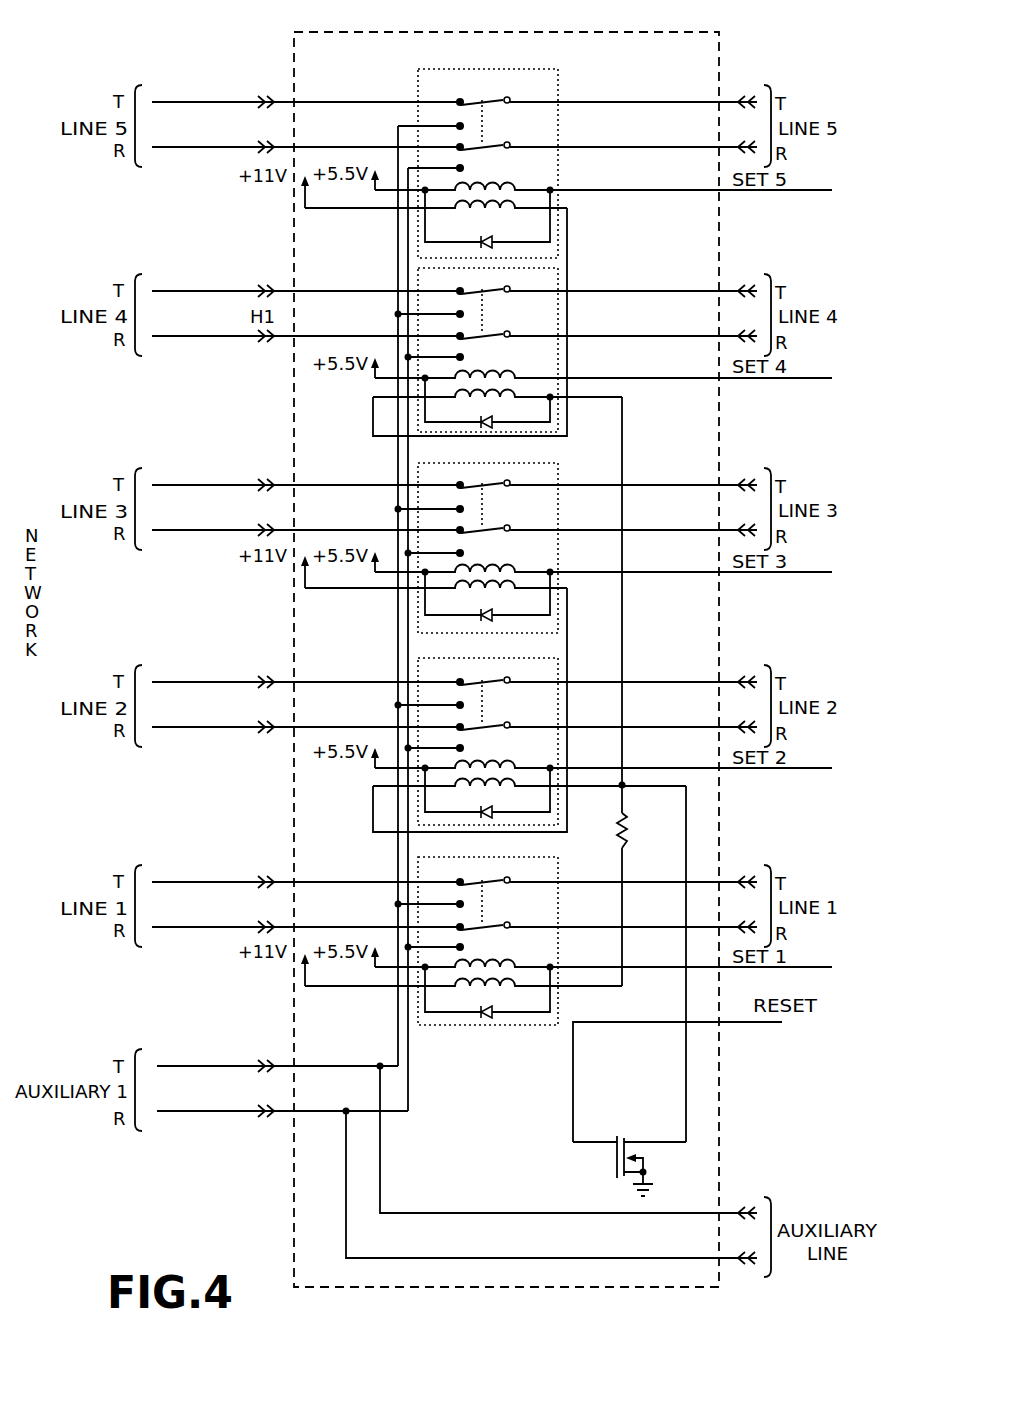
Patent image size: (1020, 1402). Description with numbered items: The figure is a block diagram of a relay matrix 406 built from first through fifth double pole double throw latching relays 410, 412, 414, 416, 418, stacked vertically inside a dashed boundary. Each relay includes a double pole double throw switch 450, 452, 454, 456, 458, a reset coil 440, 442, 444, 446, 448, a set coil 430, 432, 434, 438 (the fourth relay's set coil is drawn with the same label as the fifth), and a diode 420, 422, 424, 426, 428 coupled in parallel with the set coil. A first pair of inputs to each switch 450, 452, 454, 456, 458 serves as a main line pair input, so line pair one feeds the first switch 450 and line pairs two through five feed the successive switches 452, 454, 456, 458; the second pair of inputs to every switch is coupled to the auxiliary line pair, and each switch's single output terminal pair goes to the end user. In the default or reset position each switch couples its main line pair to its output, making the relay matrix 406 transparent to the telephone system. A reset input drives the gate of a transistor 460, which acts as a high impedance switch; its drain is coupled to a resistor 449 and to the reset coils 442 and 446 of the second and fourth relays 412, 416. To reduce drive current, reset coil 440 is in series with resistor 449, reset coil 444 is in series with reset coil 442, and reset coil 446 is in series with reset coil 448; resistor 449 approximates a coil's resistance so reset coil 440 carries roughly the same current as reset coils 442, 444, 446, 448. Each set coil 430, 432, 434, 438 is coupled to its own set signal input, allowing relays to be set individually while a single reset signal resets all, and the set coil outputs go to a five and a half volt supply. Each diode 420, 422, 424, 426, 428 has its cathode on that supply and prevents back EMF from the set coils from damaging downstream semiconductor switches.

The relay matrix 406 is at (668, 32).
The first double pole double throw latching relay 410 is at (557, 872).
The second double pole double throw latching relay 412 is at (557, 672).
The third double pole double throw latching relay 414 is at (557, 474).
The fourth double pole double throw latching relay 416 is at (557, 280).
The fifth double pole double throw latching relay 418 is at (557, 92).
The diode 420 is at (493, 1012).
The diode 422 is at (493, 812).
The diode 424 is at (493, 615).
The diode 426 is at (493, 421).
The diode 428 is at (493, 234).
The set coil 430 is at (484, 964).
The set coil 432 is at (484, 767).
The set coil 434 is at (484, 574).
The set coil 438 is at (484, 184).
The reset coil 440 is at (480, 989).
The reset coil 442 is at (480, 789).
The reset coil 444 is at (480, 591).
The reset coil 446 is at (480, 398).
The reset coil 448 is at (480, 211).
The resistor 449 is at (628, 826).
The double pole double throw switch 450 is at (509, 884).
The double pole double throw switch 452 is at (509, 684).
The double pole double throw switch 454 is at (509, 487).
The double pole double throw switch 456 is at (509, 293).
The double pole double throw switch 458 is at (507, 97).
The transistor 460 is at (626, 1140).